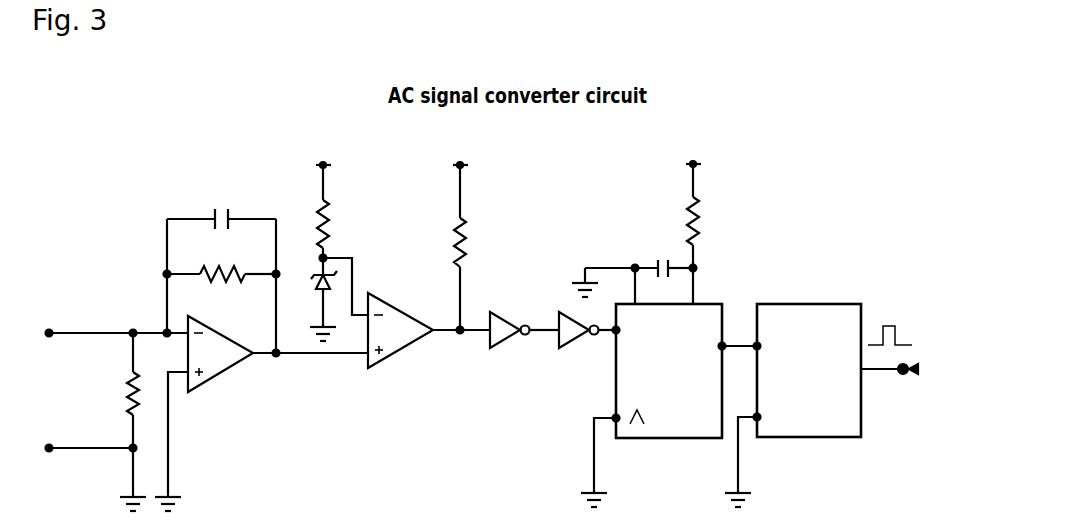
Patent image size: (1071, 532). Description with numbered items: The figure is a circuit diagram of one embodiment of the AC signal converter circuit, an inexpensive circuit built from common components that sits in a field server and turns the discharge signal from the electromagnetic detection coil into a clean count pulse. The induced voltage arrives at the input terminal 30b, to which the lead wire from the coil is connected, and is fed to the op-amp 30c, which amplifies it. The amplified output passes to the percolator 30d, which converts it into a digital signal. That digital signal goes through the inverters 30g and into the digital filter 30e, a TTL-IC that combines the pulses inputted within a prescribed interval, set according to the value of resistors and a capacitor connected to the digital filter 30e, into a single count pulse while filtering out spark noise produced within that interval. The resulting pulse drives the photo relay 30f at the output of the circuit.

The input terminal 30b is at (51, 331).
The op-amp 30c is at (212, 385).
The percolator 30d is at (372, 297).
The digital filter 30e is at (633, 439).
The photo relay 30f is at (783, 438).
The inverters 30g is at (493, 349).